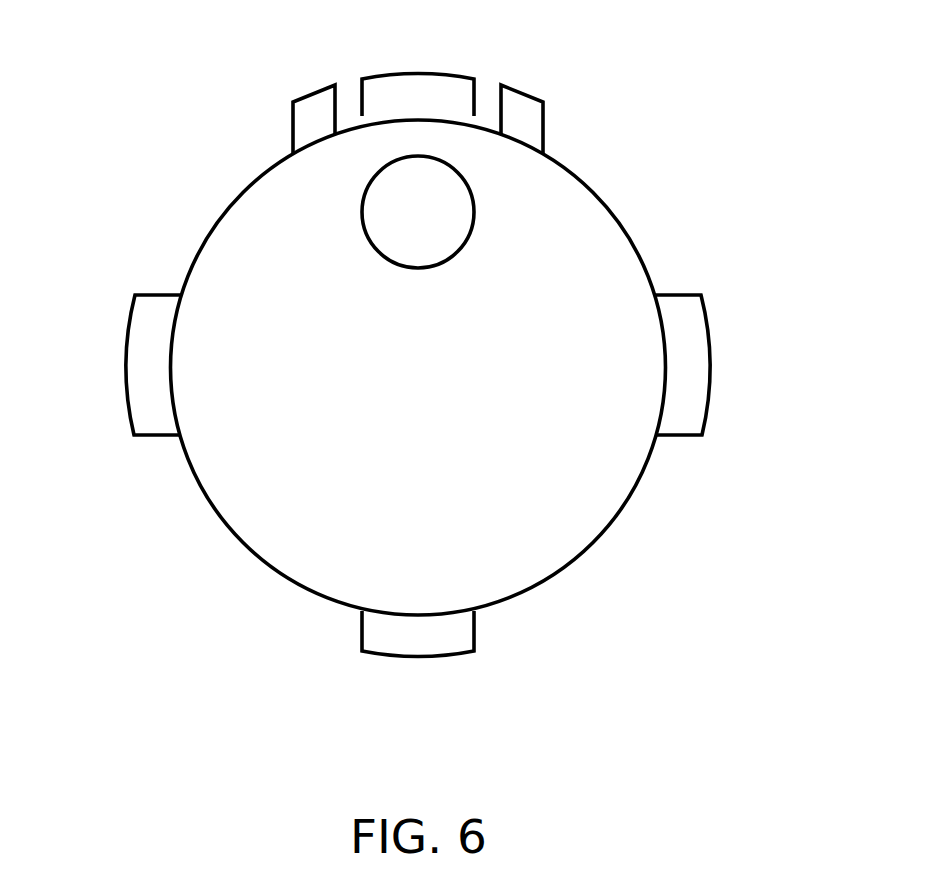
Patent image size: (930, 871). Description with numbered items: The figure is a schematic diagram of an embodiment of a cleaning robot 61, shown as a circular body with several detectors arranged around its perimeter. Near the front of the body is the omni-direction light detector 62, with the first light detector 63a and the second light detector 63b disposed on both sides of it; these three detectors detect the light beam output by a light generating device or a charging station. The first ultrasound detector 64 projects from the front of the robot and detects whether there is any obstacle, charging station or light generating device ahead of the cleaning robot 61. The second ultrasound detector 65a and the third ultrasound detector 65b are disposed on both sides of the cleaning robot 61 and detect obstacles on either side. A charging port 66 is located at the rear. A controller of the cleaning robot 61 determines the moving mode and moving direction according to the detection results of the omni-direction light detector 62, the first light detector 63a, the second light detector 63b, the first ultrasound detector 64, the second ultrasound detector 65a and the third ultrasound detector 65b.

The cleaning robot 61 is at (609, 205).
The omni-direction light detector 62 is at (362, 210).
The first light detector 63a is at (293, 127).
The second light detector 63b is at (545, 127).
The first ultrasound detector 64 is at (418, 82).
The second ultrasound detector 65a is at (138, 362).
The third ultrasound detector 65b is at (700, 363).
The charging port 66 is at (476, 628).